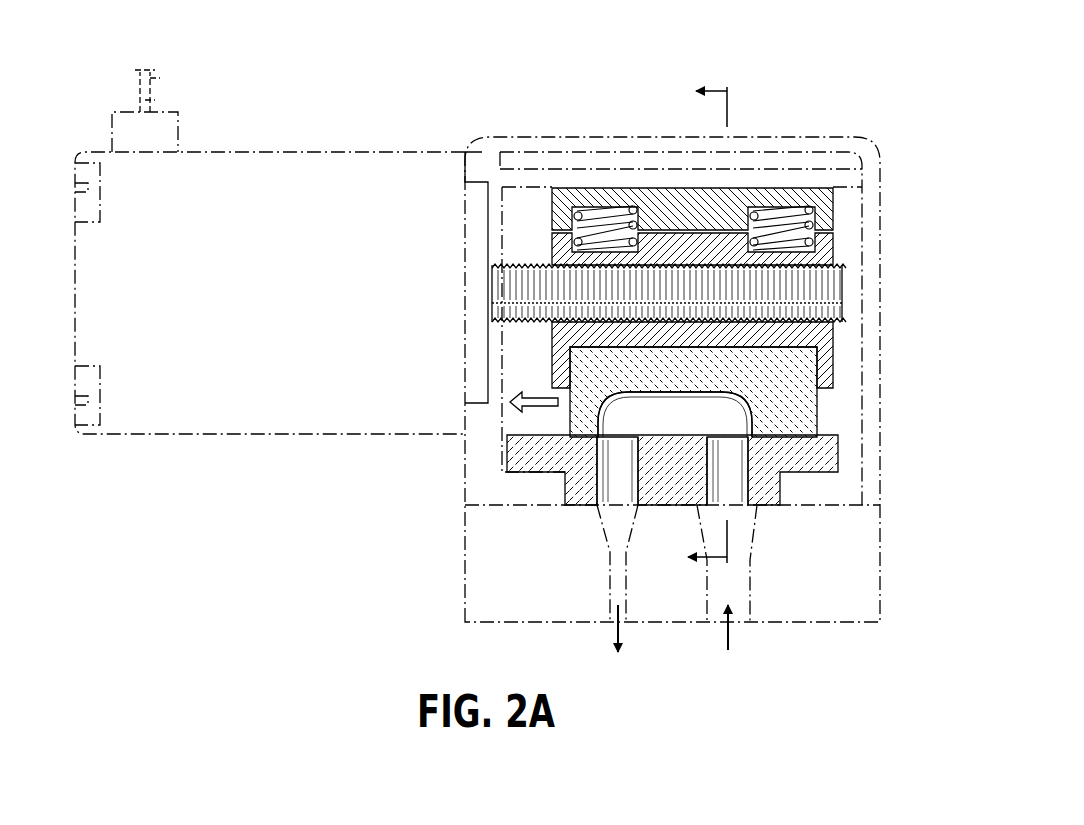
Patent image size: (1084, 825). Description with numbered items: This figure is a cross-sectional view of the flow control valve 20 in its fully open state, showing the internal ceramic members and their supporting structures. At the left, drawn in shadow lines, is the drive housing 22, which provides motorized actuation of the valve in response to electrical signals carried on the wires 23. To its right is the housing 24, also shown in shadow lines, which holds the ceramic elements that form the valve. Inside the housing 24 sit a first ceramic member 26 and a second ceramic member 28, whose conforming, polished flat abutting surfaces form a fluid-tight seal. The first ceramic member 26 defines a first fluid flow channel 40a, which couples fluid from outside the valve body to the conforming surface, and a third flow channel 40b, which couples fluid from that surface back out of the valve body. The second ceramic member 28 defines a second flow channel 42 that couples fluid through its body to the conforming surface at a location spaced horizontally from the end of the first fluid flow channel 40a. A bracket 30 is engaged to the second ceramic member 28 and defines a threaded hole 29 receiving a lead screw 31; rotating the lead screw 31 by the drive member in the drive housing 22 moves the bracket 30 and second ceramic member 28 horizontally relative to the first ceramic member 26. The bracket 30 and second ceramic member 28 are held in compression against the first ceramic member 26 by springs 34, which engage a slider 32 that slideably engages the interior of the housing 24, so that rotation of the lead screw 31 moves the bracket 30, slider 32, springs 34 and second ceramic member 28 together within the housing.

The flow control valve 20 is at (862, 66).
The drive housing 22 is at (305, 152).
The wires 23 is at (154, 80).
The housing 24 is at (520, 135).
The first ceramic member 26 is at (838, 443).
The second ceramic member 28 is at (817, 402).
The threaded hole 29 is at (842, 279).
The bracket 30 is at (835, 241).
The lead screw 31 is at (842, 316).
The slider 32 is at (835, 203).
The springs 34 is at (598, 212).
The first fluid flow channel 40a is at (736, 487).
The third flow channel 40b is at (618, 487).
The second flow channel 42 is at (675, 414).